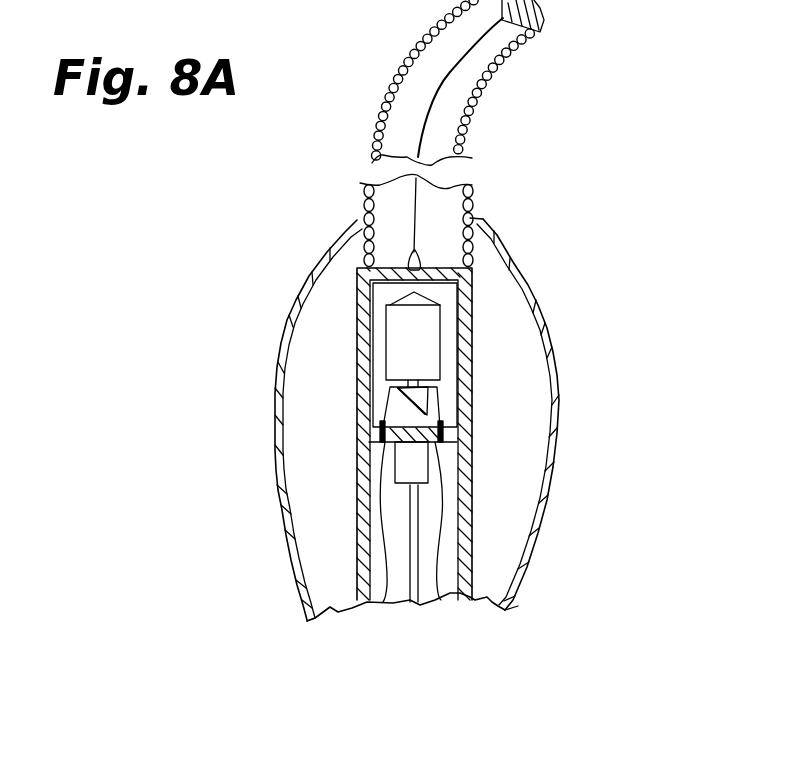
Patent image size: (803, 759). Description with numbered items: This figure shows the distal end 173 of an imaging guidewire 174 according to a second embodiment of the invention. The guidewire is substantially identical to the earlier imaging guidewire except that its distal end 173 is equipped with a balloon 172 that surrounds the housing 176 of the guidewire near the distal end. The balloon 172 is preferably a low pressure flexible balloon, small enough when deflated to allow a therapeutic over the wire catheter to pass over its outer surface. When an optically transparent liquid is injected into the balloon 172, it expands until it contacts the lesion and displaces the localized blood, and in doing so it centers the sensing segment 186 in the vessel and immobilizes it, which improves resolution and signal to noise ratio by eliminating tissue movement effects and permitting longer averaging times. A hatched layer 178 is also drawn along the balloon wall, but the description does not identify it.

The balloon 172 is at (560, 427).
The distal end 173 is at (688, 625).
The imaging guidewire 174 is at (580, 358).
The housing 176 is at (472, 305).
The shell coating 178 is at (550, 323).
The sensing segment 186 is at (358, 349).